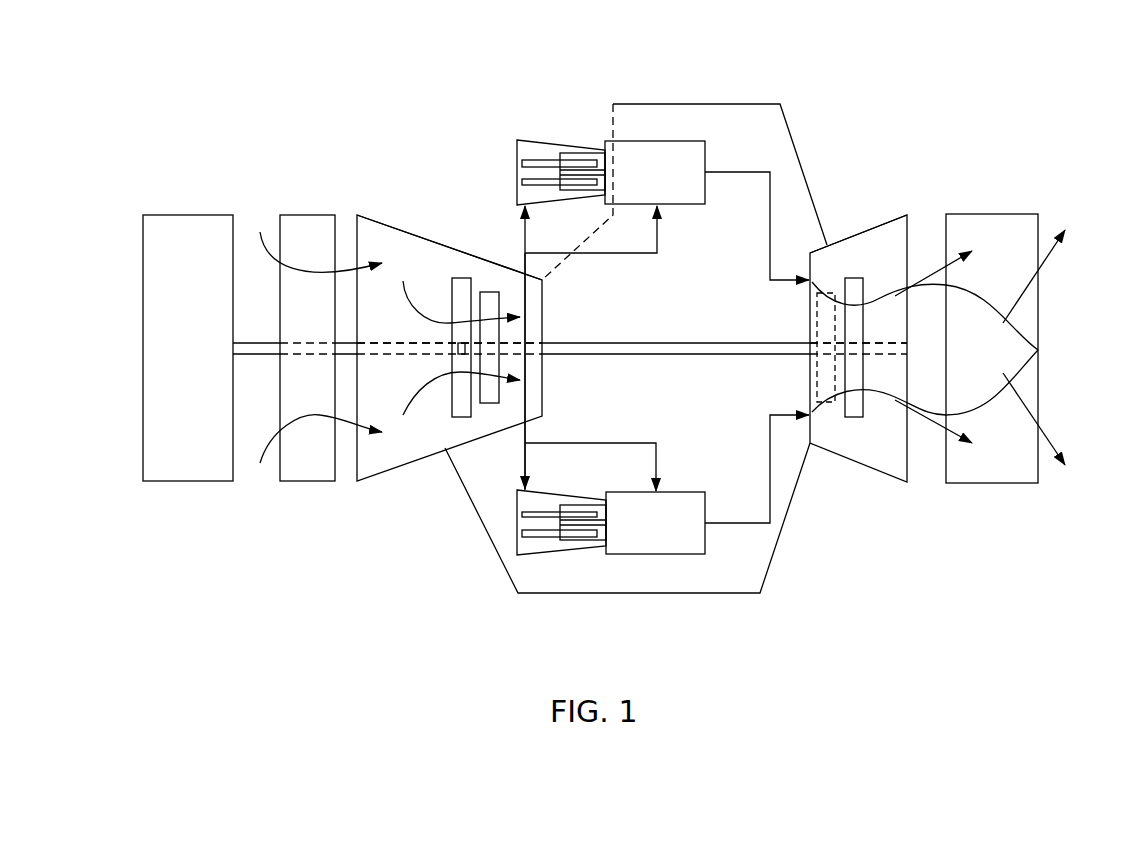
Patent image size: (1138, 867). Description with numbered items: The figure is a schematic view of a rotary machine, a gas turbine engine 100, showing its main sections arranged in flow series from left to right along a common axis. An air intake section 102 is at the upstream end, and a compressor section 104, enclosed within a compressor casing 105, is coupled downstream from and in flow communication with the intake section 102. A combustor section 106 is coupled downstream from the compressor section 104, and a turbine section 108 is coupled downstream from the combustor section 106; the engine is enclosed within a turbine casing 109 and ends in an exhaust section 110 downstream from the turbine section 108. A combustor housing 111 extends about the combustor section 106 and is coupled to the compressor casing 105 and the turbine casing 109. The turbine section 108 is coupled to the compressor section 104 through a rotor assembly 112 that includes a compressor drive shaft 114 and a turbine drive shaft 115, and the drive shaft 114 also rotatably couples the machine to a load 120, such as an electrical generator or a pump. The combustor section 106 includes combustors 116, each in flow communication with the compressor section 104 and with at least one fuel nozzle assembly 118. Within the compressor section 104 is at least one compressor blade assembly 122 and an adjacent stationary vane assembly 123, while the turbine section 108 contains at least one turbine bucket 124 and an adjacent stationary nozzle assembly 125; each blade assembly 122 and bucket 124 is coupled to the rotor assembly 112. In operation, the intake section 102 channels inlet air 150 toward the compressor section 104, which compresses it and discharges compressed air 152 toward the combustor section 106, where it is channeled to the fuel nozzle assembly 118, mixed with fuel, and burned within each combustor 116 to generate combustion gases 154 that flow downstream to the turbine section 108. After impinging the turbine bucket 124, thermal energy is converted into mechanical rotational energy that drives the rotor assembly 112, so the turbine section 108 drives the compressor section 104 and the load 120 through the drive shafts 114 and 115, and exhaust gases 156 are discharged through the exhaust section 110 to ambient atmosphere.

The gas turbine engine 100 is at (190, 95).
The air intake section 102 is at (313, 215).
The compressor section 104 is at (393, 213).
The compressor casing 105 is at (418, 234).
The combustor section 106 is at (840, 110).
The turbine section 108 is at (893, 205).
The turbine casing 109 is at (853, 229).
The exhaust section 110 is at (1000, 214).
The combustor housing 111 is at (620, 104).
The rotor assembly 112 is at (626, 342).
The compressor drive shaft 114 is at (368, 355).
The turbine drive shaft 115 is at (895, 343).
The combustor 116 is at (690, 141).
The fuel nozzle assembly 118 is at (535, 150).
The load 120 is at (190, 215).
The compressor blade assembly 122 is at (491, 403).
The stationary vane assembly 123 is at (455, 418).
The turbine bucket 124 is at (830, 403).
The stationary nozzle assembly 125 is at (849, 418).
The inlet air 150 is at (260, 232).
The compressed air 152 is at (418, 304).
The combustion gases 154 is at (1038, 350).
The exhaust gases 156 is at (1052, 258).